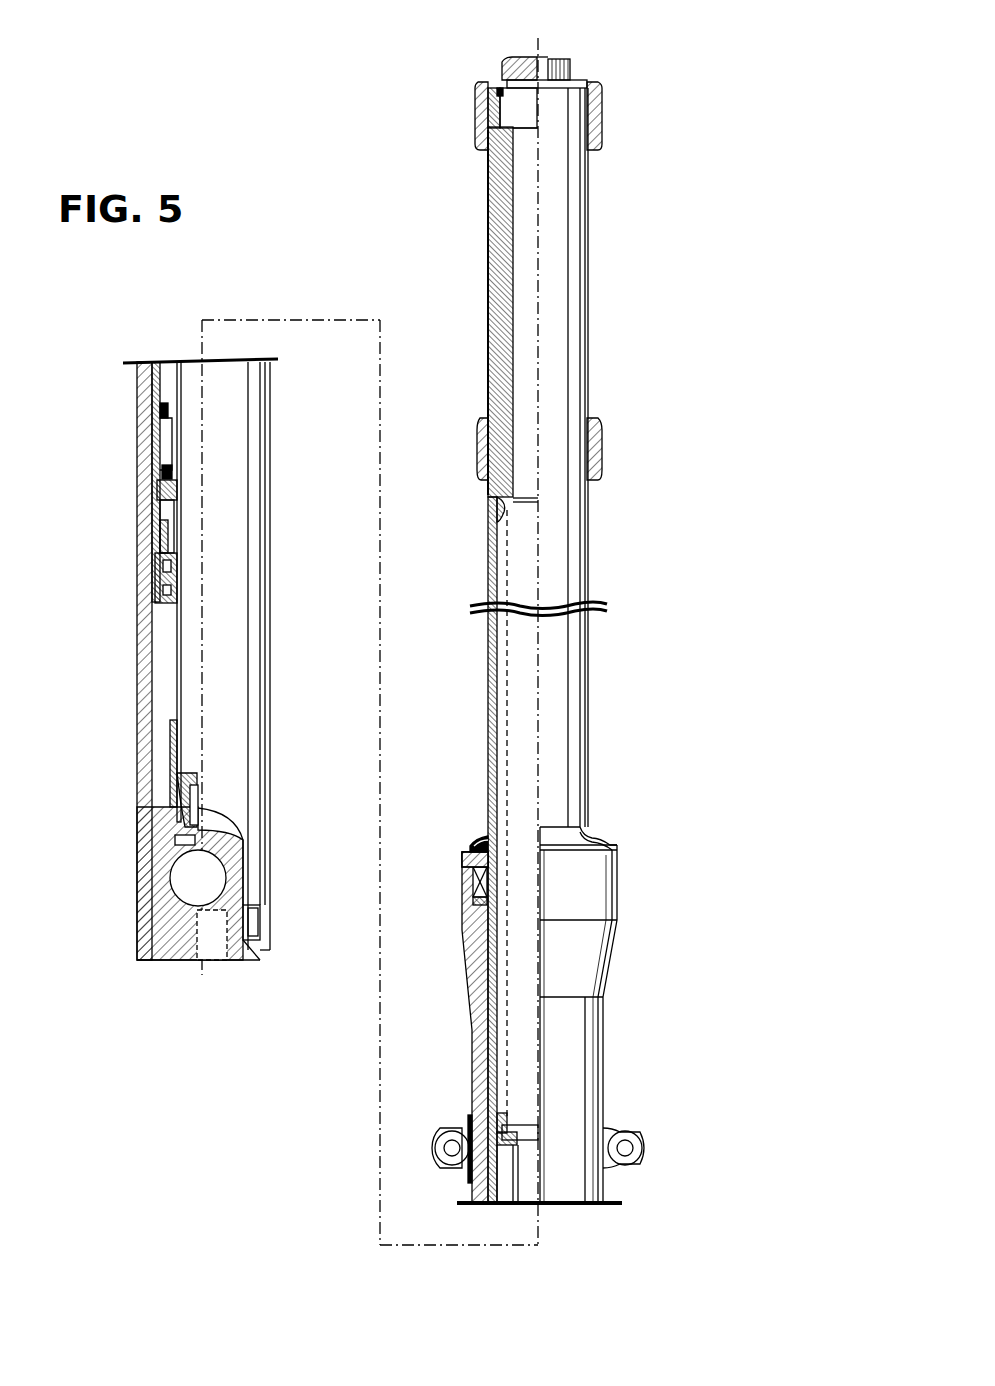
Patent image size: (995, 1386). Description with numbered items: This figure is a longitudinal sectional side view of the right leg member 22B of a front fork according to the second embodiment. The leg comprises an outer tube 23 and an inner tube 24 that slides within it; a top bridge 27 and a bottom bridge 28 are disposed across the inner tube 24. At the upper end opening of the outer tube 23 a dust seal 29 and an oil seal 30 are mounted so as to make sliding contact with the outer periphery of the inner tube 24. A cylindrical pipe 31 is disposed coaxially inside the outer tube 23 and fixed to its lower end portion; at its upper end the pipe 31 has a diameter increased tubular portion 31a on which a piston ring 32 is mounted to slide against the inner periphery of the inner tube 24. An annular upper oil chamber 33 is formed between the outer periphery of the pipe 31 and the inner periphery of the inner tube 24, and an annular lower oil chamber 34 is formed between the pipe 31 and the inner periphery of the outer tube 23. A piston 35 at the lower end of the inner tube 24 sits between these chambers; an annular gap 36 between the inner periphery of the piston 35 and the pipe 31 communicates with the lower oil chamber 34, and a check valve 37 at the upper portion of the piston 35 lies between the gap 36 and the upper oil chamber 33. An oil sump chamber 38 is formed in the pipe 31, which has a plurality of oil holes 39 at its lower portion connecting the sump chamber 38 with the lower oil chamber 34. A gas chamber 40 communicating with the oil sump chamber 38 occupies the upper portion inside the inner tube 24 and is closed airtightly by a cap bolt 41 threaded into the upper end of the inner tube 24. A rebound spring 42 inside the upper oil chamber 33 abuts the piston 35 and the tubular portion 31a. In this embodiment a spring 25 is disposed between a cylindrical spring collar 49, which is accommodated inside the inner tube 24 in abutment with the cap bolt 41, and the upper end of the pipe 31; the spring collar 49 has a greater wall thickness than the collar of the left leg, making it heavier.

The right leg member 22B is at (592, 718).
The outer tube 23 is at (604, 1068).
The inner tube 24 is at (578, 332).
The spring 25 is at (492, 520).
The top bridge 27 is at (528, 92).
The bottom bridge 28 is at (478, 445).
The dust seal 29 is at (485, 840).
The oil seal 30 is at (478, 886).
The pipe 31 is at (170, 683).
The diameter increased tubular portion 31a is at (510, 1128).
The piston ring 32 is at (468, 1125).
The upper oil chamber 33 is at (168, 386).
The lower oil chamber 34 is at (162, 752).
The piston 35 is at (162, 554).
The annular gap 36 is at (172, 542).
The check valve 37 is at (180, 492).
The oil sump chamber 38 is at (190, 758).
The oil holes 39 is at (183, 698).
The gas chamber 40 is at (526, 248).
The cap bolt 41 is at (505, 72).
The rebound spring 42 is at (162, 408).
The spring collar 49 is at (497, 208).